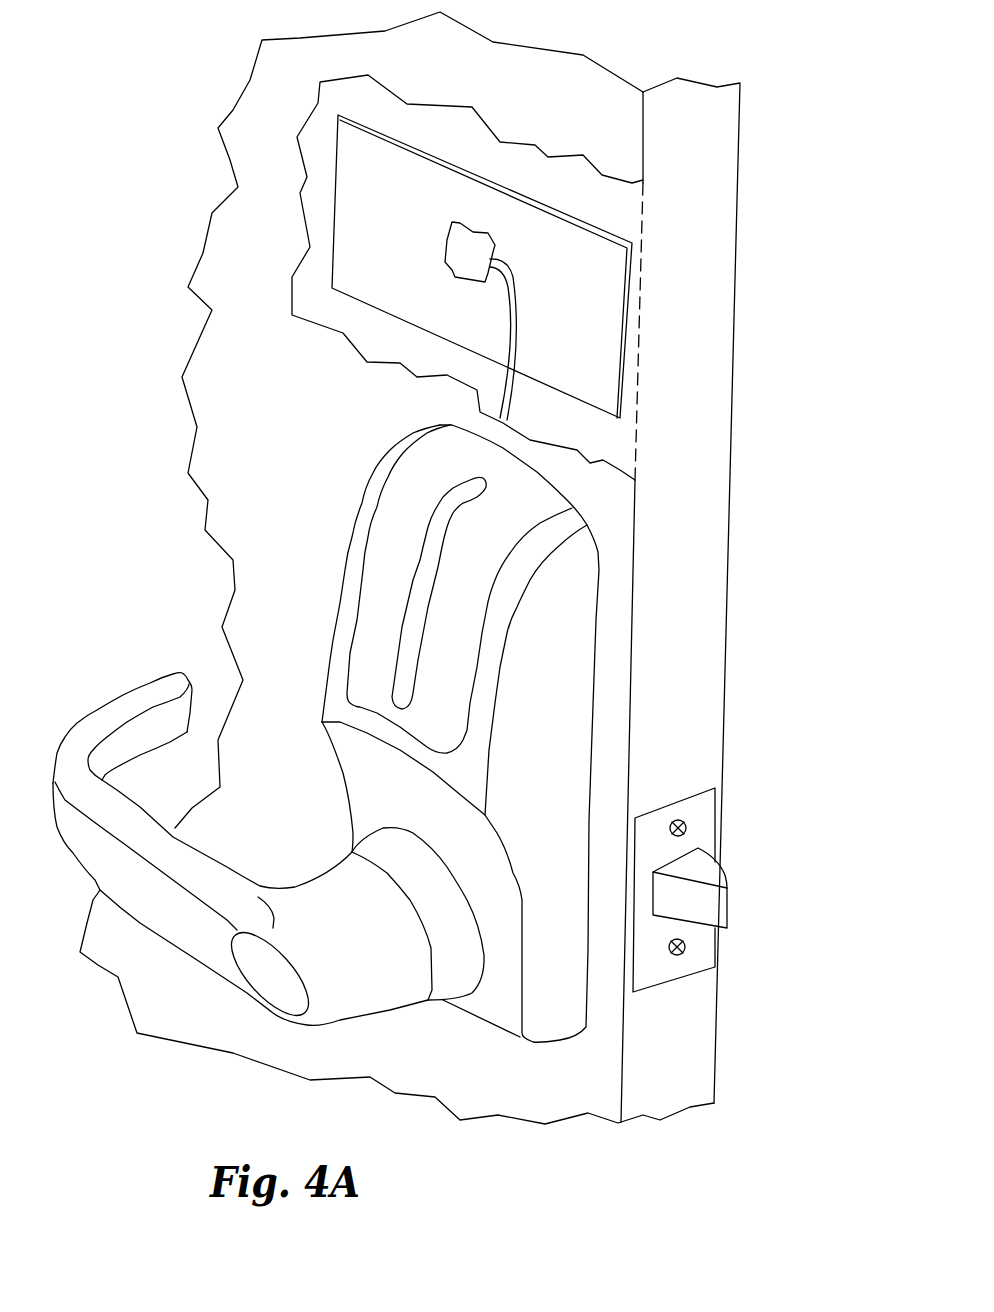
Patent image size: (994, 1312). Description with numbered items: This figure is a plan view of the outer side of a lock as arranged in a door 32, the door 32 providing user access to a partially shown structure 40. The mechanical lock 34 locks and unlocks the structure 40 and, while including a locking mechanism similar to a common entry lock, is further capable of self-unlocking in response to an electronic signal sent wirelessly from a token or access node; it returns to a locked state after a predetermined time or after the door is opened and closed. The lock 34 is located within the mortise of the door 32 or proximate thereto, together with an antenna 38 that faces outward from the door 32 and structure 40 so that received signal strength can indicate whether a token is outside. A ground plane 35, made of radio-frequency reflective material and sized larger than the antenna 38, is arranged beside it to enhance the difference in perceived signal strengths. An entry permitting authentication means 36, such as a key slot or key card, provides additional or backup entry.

The door 32 is at (692, 146).
The mechanical lock 34 is at (702, 953).
The ground plane 35 is at (602, 357).
The entry permitting authentication means 36 is at (440, 510).
The antenna 38 is at (447, 243).
The structure 40 is at (815, 390).